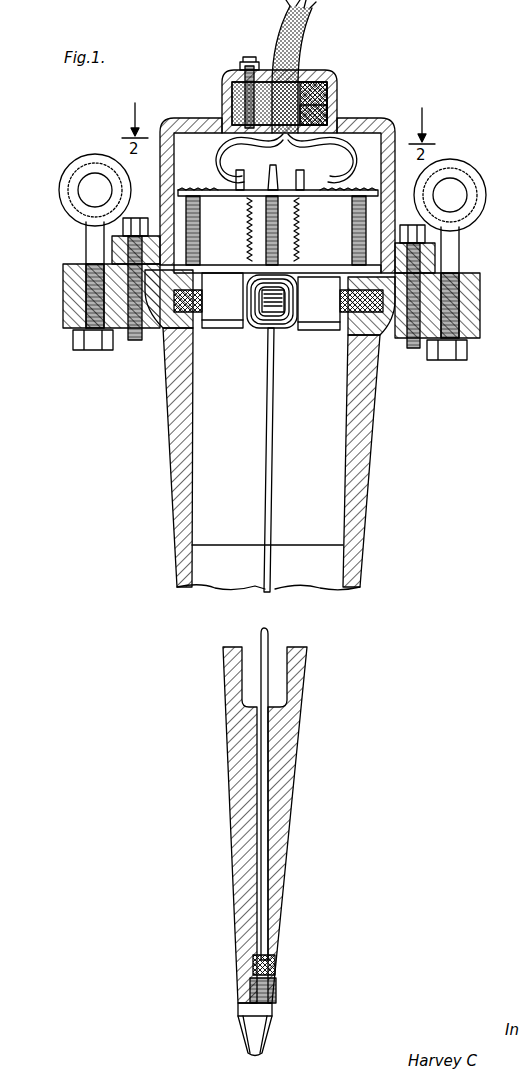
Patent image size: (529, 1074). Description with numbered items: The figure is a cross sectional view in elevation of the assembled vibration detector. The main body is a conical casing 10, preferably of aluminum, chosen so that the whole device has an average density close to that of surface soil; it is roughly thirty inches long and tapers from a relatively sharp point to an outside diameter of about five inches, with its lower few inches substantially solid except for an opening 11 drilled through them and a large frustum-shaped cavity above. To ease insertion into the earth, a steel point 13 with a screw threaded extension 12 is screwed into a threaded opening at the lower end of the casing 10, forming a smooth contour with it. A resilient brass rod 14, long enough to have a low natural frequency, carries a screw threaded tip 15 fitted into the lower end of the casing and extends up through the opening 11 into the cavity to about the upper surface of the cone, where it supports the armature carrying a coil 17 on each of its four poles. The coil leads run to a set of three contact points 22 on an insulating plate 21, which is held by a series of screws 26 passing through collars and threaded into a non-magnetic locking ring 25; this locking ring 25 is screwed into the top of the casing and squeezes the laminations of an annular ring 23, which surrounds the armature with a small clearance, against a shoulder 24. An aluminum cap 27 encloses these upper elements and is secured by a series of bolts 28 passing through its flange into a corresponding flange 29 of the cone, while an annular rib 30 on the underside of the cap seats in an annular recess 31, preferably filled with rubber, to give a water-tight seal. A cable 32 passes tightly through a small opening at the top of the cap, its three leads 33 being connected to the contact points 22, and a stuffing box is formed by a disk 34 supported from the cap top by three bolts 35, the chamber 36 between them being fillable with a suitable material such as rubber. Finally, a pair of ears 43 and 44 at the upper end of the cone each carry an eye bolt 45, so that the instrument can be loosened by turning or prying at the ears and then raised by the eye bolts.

The conical casing 10 is at (175, 548).
The opening 11 is at (268, 783).
The screw threaded extension 12 is at (276, 992).
The steel point 13 is at (240, 1035).
The resilient rod 14 is at (271, 478).
The screw threaded tip 15 is at (272, 966).
The coil 17 is at (286, 330).
The insulating plate 21 is at (216, 190).
The contact points 22 is at (248, 200).
The annular ring 23 is at (318, 330).
The shoulder 24 is at (196, 328).
The locking ring 25 is at (208, 290).
The screws 26 is at (200, 242).
The cap 27 is at (186, 118).
The bolts 28 is at (146, 218).
The flange 29 is at (152, 326).
The annular rib 30 is at (410, 225).
The annular recess 31 is at (376, 325).
The cable 32 is at (304, 56).
The leads 33 is at (293, 158).
The disk 34 is at (336, 119).
The bolts 35 is at (249, 62).
The terminal block 36 is at (330, 101).
The ear 43 is at (480, 300).
The ear 44 is at (63, 298).
The eye bolt 45 is at (60, 195).